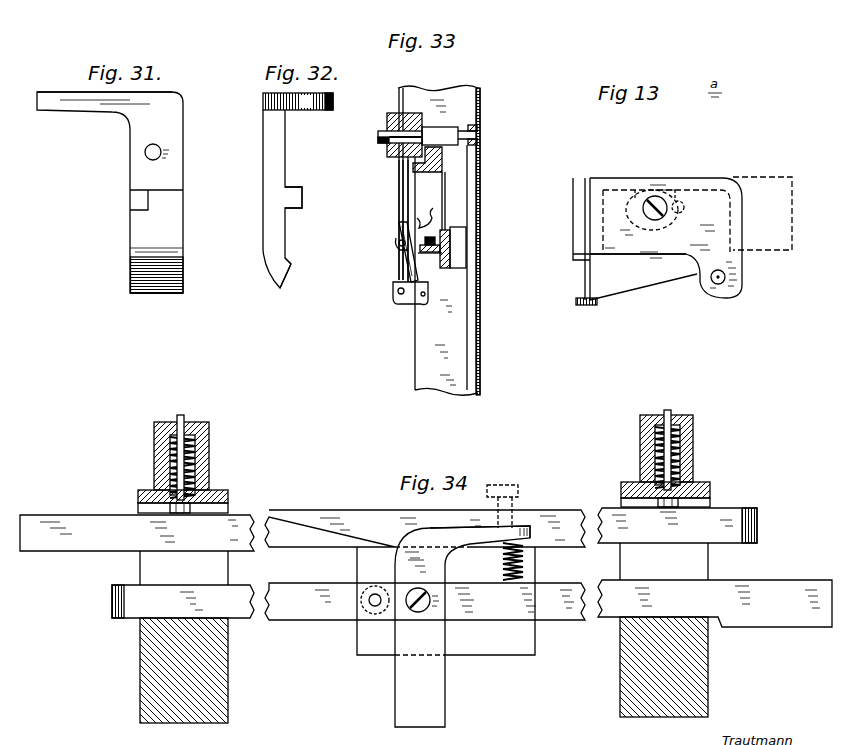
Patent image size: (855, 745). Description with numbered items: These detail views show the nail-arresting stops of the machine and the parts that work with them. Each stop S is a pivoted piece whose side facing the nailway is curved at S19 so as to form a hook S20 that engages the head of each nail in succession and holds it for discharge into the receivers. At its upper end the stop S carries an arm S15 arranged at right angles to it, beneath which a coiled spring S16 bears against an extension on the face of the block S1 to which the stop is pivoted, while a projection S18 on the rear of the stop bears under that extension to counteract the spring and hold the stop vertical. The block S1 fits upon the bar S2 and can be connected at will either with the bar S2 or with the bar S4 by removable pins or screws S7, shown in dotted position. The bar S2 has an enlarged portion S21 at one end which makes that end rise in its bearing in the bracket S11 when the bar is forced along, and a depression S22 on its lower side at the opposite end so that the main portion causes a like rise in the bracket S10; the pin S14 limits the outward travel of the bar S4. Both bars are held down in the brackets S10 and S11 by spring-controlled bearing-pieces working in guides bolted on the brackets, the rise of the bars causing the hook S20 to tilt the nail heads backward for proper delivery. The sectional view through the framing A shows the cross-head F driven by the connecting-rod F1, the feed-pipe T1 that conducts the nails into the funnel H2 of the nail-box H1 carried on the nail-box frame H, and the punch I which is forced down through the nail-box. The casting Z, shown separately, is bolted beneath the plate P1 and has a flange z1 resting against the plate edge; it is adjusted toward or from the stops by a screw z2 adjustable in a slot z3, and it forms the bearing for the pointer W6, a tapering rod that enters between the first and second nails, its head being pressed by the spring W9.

In FIG. 31, the stop S is at (110, 192).
In FIG. 32, the stop S is at (270, 199).
In FIG. 34, the stop S is at (462, 626).
In FIG. 34, the block S1 is at (446, 601).
In FIG. 34, the bar S2 is at (425, 601).
In FIG. 34, the bar S4 is at (388, 529).
In FIG. 34, the removable pins or screws S7 is at (518, 490).
In FIG. 34, the bracket S10 is at (228, 670).
In FIG. 34, the bracket S11 is at (708, 660).
In FIG. 31, the pin S14 is at (149, 201).
In FIG. 31, the arm S15 is at (104, 99).
In FIG. 32, the arm S15 is at (311, 101).
In FIG. 34, the arm S15 is at (480, 534).
In FIG. 34, the spring S16 is at (500, 561).
In FIG. 32, the projection S18 is at (302, 198).
In FIG. 31, the curved portion S19 is at (167, 270).
In FIG. 32, the curved portion S19 is at (296, 257).
In FIG. 31, the hook S20 is at (185, 285).
In FIG. 32, the hook S20 is at (300, 276).
In FIG. 34, the enlarged portion S21 is at (715, 585).
In FIG. 34, the depression S22 is at (183, 584).
In FIG. 33, the main framing A is at (439, 240).
In FIG. 33, the cross-head F is at (386, 125).
In FIG. 33, the connecting-rod F1 is at (468, 252).
In FIG. 33, the feed-pipe T1 is at (399, 185).
In FIG. 33, the punch I is at (414, 221).
In FIG. 33, the nail-box frame H is at (425, 217).
In FIG. 33, the funnel H2 is at (398, 226).
In FIG. 33, the nail-box H1 is at (400, 258).
In FIG. 13A, the casting Z is at (657, 222).
In FIG. 13A, the plate P1 is at (762, 213).
In FIG. 13A, the flange z1 is at (648, 255).
In FIG. 13A, the screw z2 is at (672, 218).
In FIG. 13A, the slot z3 is at (686, 207).
In FIG. 13A, the pointer W6 is at (583, 268).
In FIG. 13A, the spring W9 is at (643, 288).